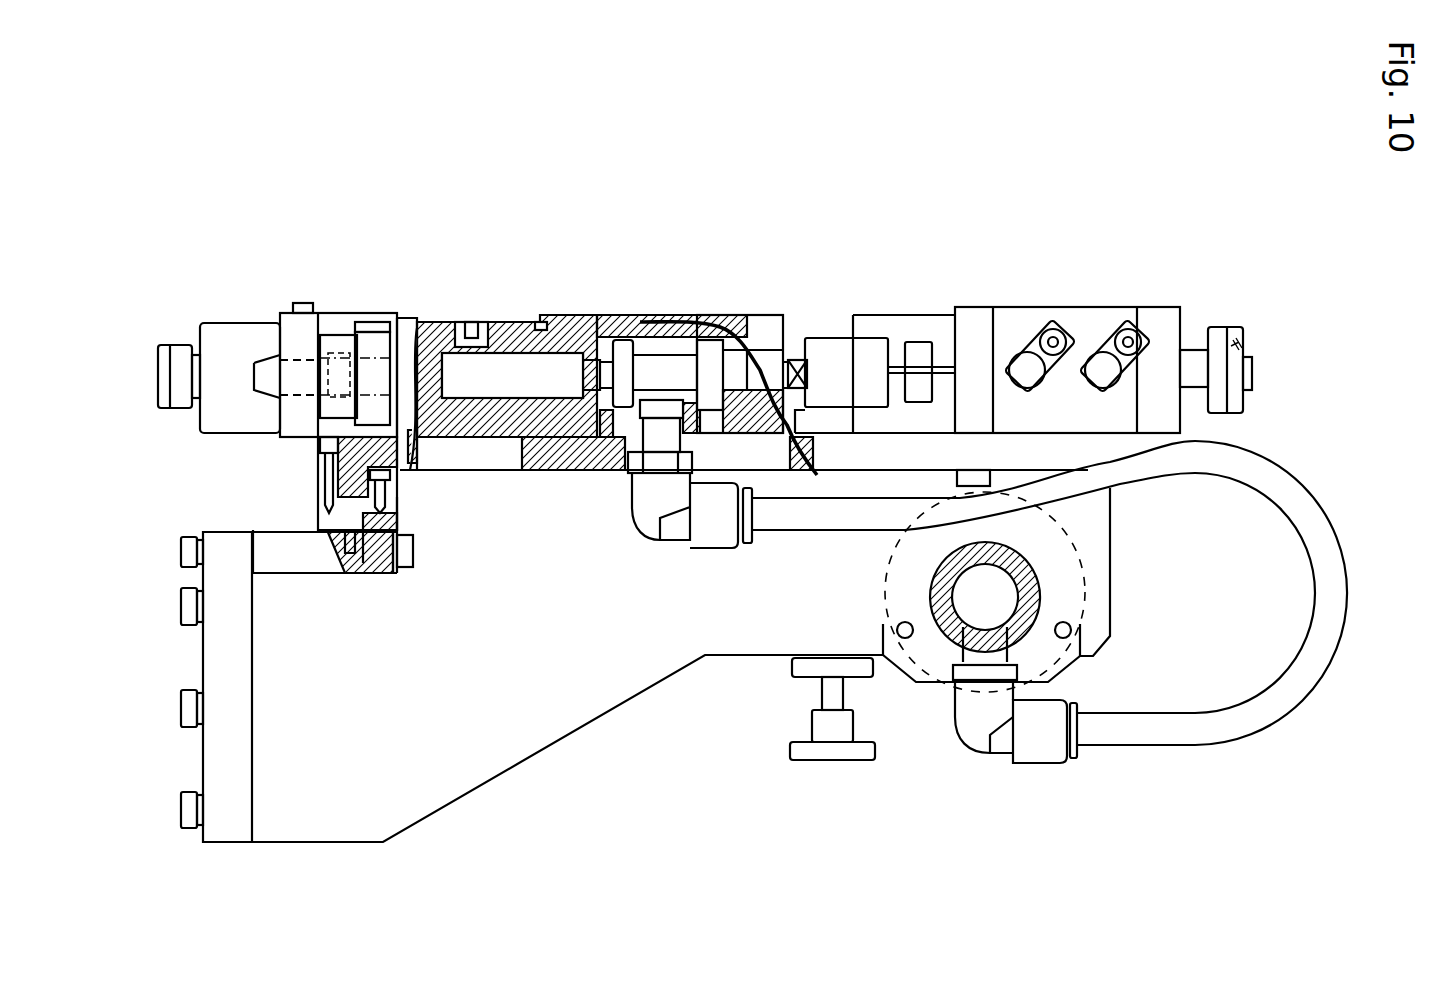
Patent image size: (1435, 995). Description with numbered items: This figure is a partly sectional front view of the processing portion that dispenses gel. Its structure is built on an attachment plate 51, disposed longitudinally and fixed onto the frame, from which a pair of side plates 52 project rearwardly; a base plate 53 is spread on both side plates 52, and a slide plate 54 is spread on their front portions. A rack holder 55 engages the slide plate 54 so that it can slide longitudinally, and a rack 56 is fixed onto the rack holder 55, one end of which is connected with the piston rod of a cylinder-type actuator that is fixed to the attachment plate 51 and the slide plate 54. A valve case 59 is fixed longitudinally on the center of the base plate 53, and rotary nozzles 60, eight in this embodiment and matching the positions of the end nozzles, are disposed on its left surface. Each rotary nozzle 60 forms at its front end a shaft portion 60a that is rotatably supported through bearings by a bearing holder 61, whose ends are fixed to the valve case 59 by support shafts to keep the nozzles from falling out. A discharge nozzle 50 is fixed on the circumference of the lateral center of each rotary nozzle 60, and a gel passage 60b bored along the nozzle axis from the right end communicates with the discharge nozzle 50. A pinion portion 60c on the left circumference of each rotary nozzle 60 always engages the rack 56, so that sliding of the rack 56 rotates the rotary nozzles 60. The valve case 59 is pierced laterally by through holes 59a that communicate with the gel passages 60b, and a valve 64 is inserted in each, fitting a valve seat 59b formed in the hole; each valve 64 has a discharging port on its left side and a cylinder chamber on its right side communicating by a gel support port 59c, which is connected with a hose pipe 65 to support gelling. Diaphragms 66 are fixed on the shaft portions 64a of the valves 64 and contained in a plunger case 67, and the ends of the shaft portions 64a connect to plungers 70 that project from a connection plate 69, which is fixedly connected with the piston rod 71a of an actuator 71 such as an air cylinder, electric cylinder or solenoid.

The discharge nozzle 50 is at (418, 333).
The attachment plate 51 is at (230, 822).
The side plate 52 is at (410, 800).
The base plate 53 is at (510, 472).
The slide plate 54 is at (283, 530).
The rack holder 55 is at (320, 464).
The rack 56 is at (330, 441).
The valve case 59 is at (646, 336).
The through hole 59a is at (602, 407).
The valve seat 59b is at (629, 337).
The gel support port 59c is at (660, 408).
The rotary nozzle 60 is at (520, 320).
The shaft portion 60a is at (253, 372).
The gel passage 60b is at (492, 390).
The pinion portion 60c is at (375, 328).
The bearing holder 61 is at (285, 325).
The valve 64 is at (620, 320).
The shaft portion 64a is at (718, 332).
The hose pipe 65 is at (1312, 605).
The diaphragm 66 is at (762, 330).
The plunger case 67 is at (786, 350).
The connection plate 69 is at (870, 350).
The plunger 70 is at (750, 382).
The actuator 71 is at (1061, 332).
The piston rod 71a is at (935, 318).